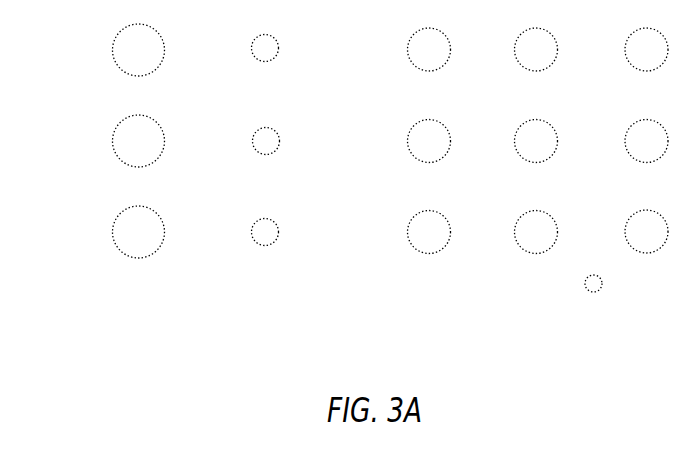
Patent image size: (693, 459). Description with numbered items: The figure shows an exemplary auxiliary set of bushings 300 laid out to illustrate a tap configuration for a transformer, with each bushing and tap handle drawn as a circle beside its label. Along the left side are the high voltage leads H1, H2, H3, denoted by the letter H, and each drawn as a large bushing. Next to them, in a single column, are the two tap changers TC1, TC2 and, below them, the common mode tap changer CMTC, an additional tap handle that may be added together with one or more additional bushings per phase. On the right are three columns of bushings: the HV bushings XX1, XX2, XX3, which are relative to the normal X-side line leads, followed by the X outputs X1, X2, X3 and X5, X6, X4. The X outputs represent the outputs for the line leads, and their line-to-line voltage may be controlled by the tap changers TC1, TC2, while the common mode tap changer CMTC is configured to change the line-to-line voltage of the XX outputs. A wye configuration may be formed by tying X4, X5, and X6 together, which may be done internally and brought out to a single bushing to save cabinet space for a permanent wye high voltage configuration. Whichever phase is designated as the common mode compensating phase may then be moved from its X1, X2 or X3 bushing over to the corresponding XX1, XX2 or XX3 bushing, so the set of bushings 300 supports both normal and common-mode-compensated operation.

The auxiliary set of bushings 300 is at (371, 179).
The high voltage lead H1 is at (120, 50).
The high voltage lead H2 is at (120, 141).
The high voltage lead H3 is at (120, 232).
The tap changer TC1 is at (267, 32).
The tap changer TC2 is at (267, 123).
The common mode tap changer CMTC is at (265, 215).
The HV bushing XX1 is at (402, 49).
The HV bushing XX2 is at (402, 141).
The HV bushing XX3 is at (402, 232).
The X output bushing X1 is at (516, 49).
The X output bushing X2 is at (516, 141).
The X output bushing X3 is at (516, 232).
The X output bushing X4 is at (626, 231).
The X output bushing X5 is at (626, 49).
The X output bushing X6 is at (626, 141).